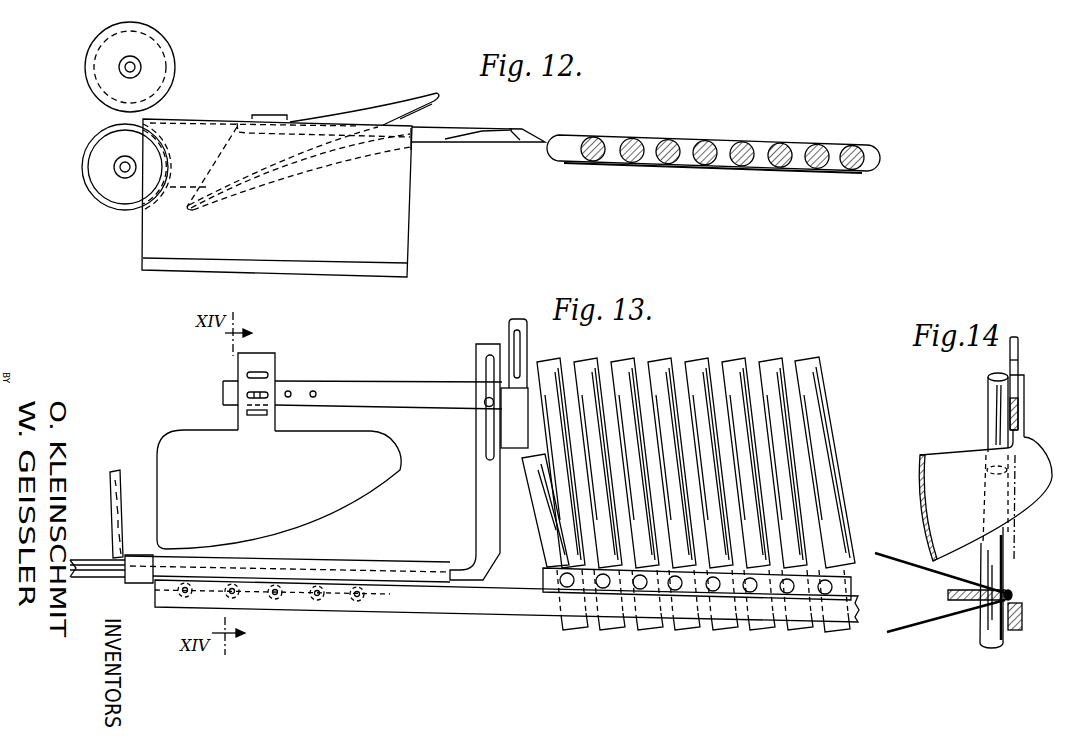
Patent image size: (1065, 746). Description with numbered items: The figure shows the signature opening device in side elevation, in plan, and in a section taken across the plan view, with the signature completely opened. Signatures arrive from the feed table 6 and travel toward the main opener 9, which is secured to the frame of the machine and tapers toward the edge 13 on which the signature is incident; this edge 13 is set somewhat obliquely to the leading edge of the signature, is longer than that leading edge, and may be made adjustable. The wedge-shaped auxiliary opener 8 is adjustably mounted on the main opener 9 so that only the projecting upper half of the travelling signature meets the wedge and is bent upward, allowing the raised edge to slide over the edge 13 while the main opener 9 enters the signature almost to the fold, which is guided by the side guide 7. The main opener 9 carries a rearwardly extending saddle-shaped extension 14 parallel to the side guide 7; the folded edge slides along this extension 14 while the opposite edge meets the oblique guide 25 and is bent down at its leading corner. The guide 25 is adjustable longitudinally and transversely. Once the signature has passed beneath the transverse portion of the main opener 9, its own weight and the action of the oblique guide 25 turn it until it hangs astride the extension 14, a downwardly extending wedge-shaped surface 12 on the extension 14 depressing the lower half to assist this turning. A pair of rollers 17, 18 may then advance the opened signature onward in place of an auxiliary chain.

In FIG. 12, the feed table 6 is at (708, 160).
In FIG. 13, the feed table 6 is at (775, 370).
In FIG. 14, the feed table 6 is at (988, 389).
In FIG. 13, the side guide 7 is at (488, 604).
In FIG. 14, the side guide 7 is at (1026, 613).
In FIG. 12, the auxiliary opener 8 is at (522, 139).
In FIG. 13, the auxiliary opener 8 is at (515, 441).
In FIG. 13, the main opener 9 is at (475, 527).
In FIG. 12, the wedge-shaped surface 12 is at (412, 143).
In FIG. 14, the wedge-shaped surface 12 is at (948, 594).
In FIG. 13, the edge 13 is at (500, 527).
In FIG. 12, the saddle-shaped extension 14 is at (208, 117).
In FIG. 13, the saddle-shaped extension 14 is at (418, 573).
In FIG. 14, the saddle-shaped extension 14 is at (1014, 596).
In FIG. 12, the roller 17 is at (163, 46).
In FIG. 13, the roller 17 is at (86, 562).
In FIG. 12, the roller 18 is at (121, 198).
In FIG. 12, the oblique guide 25 is at (427, 99).
In FIG. 13, the oblique guide 25 is at (385, 480).
In FIG. 14, the oblique guide 25 is at (1022, 462).